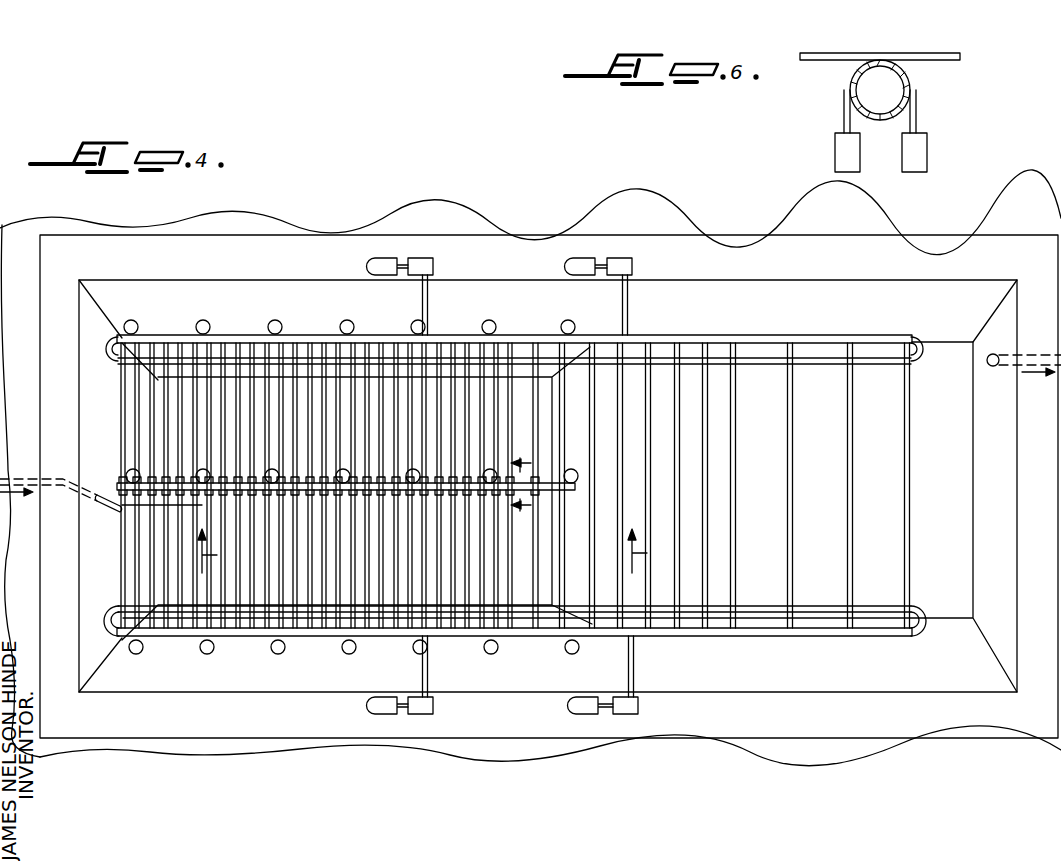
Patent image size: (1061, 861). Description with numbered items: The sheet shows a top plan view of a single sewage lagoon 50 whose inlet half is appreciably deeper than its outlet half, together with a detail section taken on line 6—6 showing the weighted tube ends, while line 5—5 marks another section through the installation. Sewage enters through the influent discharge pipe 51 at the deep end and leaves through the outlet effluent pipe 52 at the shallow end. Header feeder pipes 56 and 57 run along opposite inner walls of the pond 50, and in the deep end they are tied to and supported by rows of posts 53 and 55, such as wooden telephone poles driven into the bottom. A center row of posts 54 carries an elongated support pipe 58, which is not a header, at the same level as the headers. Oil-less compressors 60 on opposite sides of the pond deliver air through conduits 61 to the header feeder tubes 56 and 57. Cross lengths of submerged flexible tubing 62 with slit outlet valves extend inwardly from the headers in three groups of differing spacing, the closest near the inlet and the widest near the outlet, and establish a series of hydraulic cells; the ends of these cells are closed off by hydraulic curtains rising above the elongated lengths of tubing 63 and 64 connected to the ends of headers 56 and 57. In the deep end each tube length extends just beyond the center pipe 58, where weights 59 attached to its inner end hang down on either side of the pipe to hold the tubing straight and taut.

In FIG. 4, the lagoon 50 is at (887, 668).
In FIG. 4, the influent discharge pipe 51 is at (19, 476).
In FIG. 4, the outlet effluent pipe 52 is at (1038, 352).
In FIG. 4, the posts 53 is at (254, 664).
In FIG. 4, the posts 54 is at (132, 474).
In FIG. 4, the posts 55 is at (198, 320).
In FIG. 4, the header feeder pipe 56 is at (312, 638).
In FIG. 4, the header feeder pipe 57 is at (232, 334).
In FIG. 4, the elongated support pipe 58 is at (566, 491).
In FIG. 6, the elongated support pipe 58 is at (882, 130).
In FIG. 6, the weights 59 is at (834, 149).
In FIG. 4, the oil-less compressors 60 is at (630, 260).
In FIG. 4, the conduits 61 is at (430, 303).
In FIG. 4, the submerged tubing 62 is at (122, 552).
In FIG. 6, the submerged tubing 62 is at (955, 52).
In FIG. 4, the elongated length of submerged flexible tubing 63 is at (876, 607).
In FIG. 4, the elongated length of submerged flexible tubing 64 is at (866, 362).
In FIG. 4, the section line 5 is at (421, 562).
In FIG. 4, the section line 6 is at (511, 486).